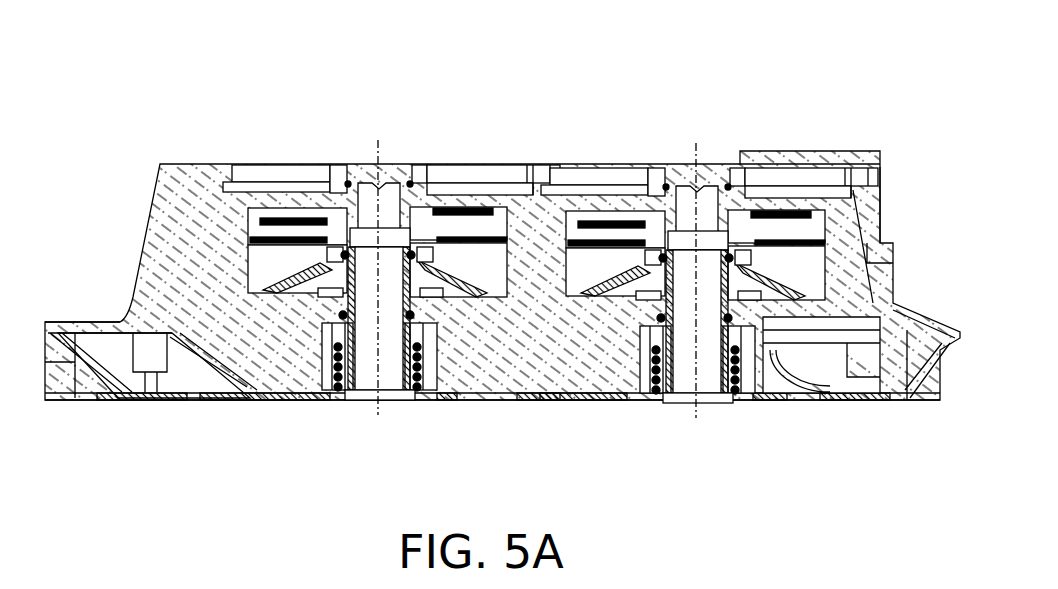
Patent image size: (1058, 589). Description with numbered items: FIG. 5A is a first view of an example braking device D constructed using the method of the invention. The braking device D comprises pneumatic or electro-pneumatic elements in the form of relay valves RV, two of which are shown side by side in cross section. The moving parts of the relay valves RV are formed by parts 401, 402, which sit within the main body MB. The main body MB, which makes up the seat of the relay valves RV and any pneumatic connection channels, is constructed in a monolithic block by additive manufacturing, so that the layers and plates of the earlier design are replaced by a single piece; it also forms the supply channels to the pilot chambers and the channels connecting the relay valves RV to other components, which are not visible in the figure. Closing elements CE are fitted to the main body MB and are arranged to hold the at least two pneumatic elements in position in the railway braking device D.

The braking device D is at (502, 267).
The main body MB is at (143, 233).
The closing elements CE is at (415, 160).
The moving part 401 is at (603, 187).
The moving part 402 is at (313, 317).
The relay valve RV is at (386, 367).